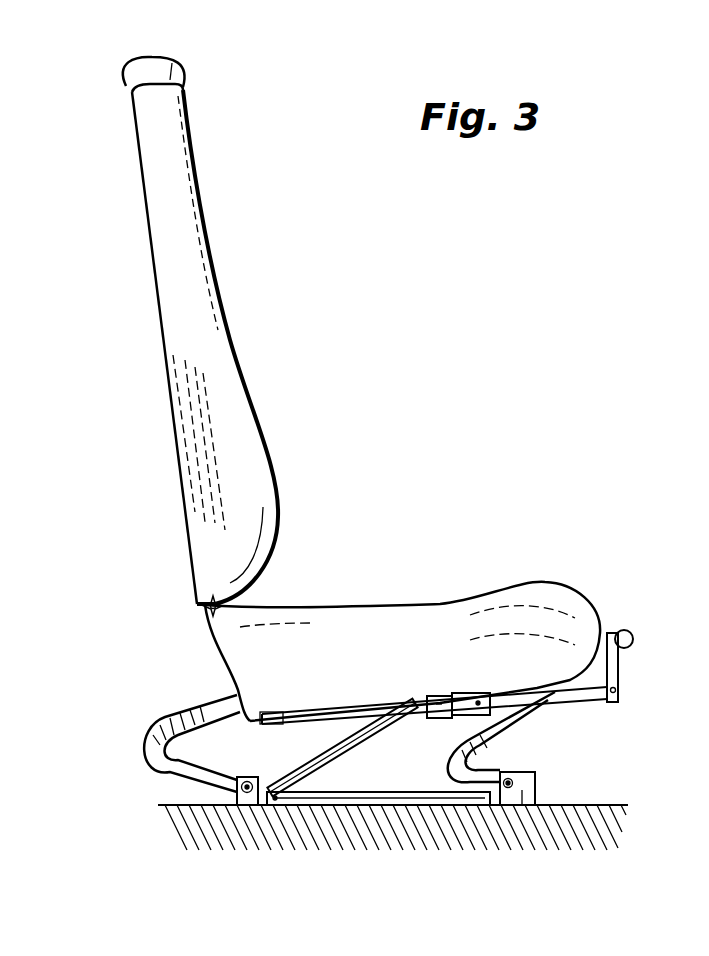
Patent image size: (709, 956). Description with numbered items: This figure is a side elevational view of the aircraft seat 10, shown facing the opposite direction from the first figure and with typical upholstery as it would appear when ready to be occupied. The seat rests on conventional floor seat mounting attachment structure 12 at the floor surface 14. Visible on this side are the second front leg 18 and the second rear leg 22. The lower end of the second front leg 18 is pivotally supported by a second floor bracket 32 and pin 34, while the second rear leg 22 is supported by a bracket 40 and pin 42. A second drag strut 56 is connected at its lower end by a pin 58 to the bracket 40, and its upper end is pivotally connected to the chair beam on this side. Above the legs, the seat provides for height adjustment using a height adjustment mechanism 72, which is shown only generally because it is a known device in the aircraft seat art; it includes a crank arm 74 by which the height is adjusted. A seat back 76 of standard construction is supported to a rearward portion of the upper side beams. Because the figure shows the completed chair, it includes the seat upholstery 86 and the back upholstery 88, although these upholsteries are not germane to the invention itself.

The aircraft seat 10 is at (382, 457).
The floor seat mounting attachment structure 12 is at (190, 822).
The floor surface 14 is at (607, 805).
The second front leg 18 is at (545, 736).
The second rear leg 22 is at (187, 712).
The second floor bracket 32 is at (522, 805).
The pin 34 is at (511, 772).
The bracket 40 is at (243, 803).
The pin 42 is at (247, 779).
The second drag strut 56 is at (335, 762).
The pin 58 is at (272, 802).
The height adjustment mechanism 72 is at (447, 721).
The crank arm 74 is at (612, 668).
The seat back 76 is at (217, 238).
The seat upholstery 86 is at (500, 600).
The back upholstery 88 is at (233, 390).